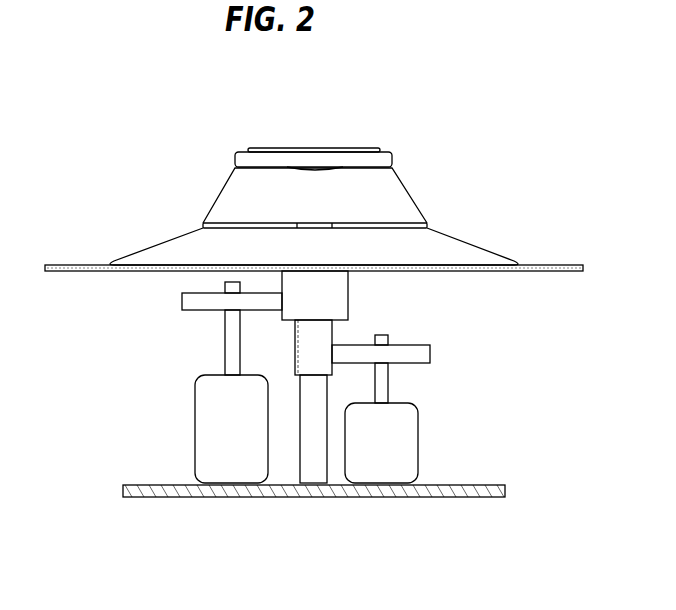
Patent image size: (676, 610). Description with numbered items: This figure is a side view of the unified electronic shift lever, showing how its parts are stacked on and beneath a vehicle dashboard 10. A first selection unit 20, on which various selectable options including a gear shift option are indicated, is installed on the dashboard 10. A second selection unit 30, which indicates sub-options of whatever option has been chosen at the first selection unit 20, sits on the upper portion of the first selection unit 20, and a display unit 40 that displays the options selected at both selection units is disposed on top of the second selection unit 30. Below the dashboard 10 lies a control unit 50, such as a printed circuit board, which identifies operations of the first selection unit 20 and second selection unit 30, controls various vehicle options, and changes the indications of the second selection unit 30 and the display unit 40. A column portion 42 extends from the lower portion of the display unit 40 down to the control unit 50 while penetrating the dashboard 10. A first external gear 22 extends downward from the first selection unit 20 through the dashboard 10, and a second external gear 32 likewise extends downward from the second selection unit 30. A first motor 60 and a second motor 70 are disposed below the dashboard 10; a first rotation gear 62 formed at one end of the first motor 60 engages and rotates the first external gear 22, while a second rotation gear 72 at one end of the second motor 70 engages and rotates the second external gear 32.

The dashboard 10 is at (80, 265).
The first selection unit 20 is at (440, 248).
The first external gear 22 is at (320, 296).
The second selection unit 30 is at (383, 195).
The second external gear 32 is at (315, 343).
The display unit 40 is at (325, 158).
The column portion 42 is at (313, 462).
The control unit 50 is at (133, 485).
The first motor 60 is at (218, 421).
The first rotation gear 62 is at (185, 303).
The second motor 70 is at (392, 442).
The second rotation gear 72 is at (420, 358).